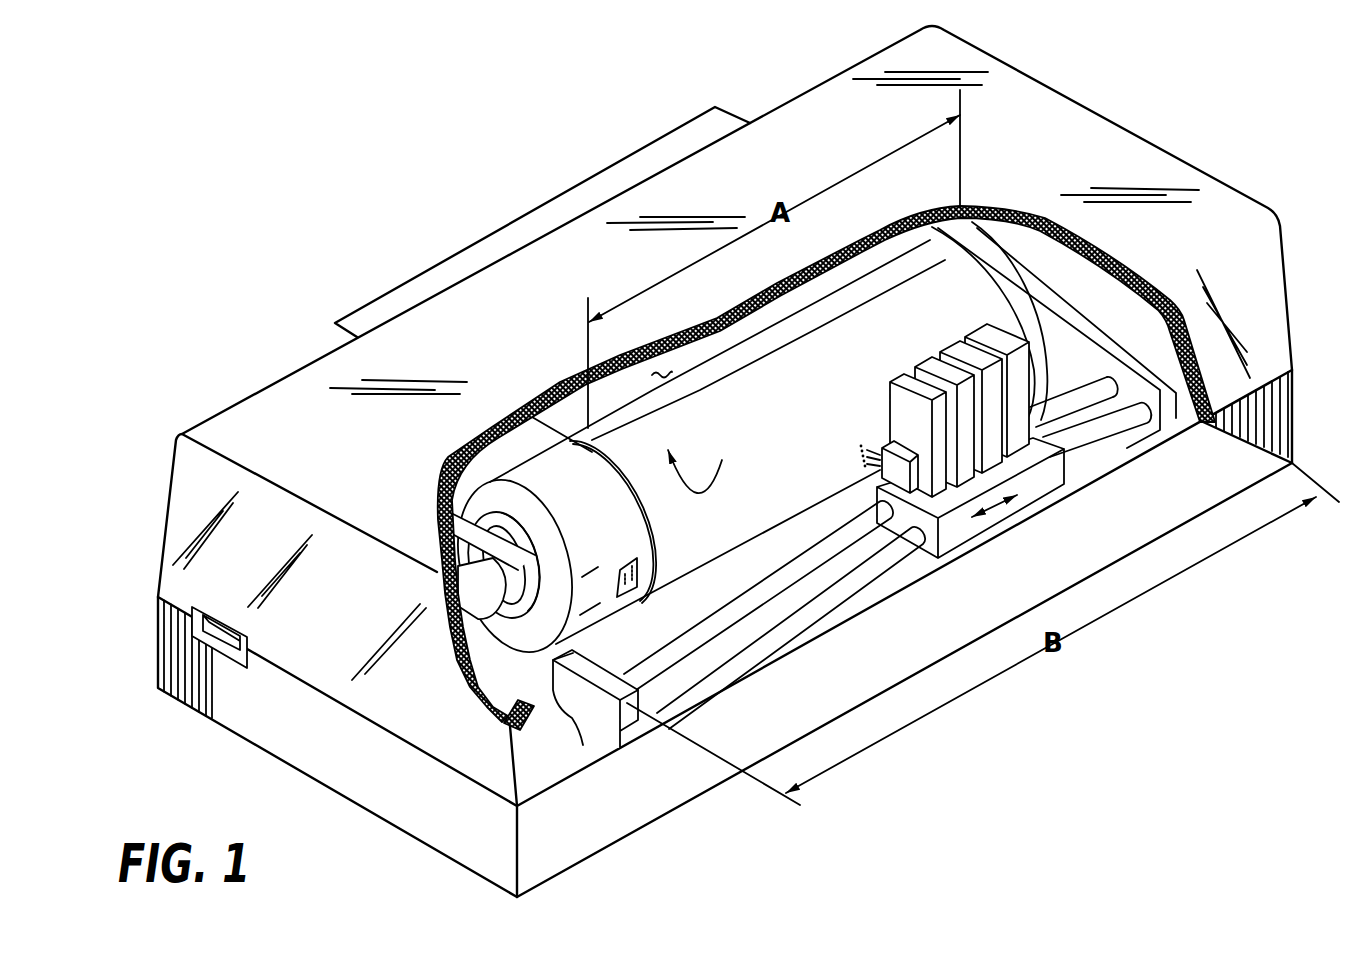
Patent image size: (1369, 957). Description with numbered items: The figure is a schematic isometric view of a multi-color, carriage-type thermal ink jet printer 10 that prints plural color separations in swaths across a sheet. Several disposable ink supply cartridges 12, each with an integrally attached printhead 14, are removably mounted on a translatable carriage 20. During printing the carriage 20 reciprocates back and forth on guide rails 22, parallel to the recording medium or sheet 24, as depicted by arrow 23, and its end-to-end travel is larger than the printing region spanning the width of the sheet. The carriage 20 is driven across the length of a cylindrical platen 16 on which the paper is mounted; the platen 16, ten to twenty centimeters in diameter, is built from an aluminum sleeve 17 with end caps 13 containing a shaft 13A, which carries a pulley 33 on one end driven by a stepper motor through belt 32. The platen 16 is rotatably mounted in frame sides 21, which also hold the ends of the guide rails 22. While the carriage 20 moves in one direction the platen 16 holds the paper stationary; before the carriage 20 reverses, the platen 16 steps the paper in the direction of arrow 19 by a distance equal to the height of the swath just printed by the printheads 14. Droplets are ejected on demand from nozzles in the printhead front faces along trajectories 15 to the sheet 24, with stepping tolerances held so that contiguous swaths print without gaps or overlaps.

The multi-color thermal ink jet printer 10 is at (424, 201).
The disposable ink supply cartridges 12 is at (985, 335).
The end caps 13 is at (554, 556).
The shaft 13A is at (467, 600).
The printhead 14 is at (897, 466).
The trajectories 15 is at (876, 480).
The cylindrical platen 16 is at (496, 448).
The aluminum sleeve 17 is at (502, 484).
The arrow 19 is at (701, 462).
The translatable carriage 20 is at (1042, 487).
The frame sides 21 is at (1103, 340).
The guide rails 22 is at (807, 553).
The arrow 23 is at (1000, 507).
The recording medium or sheet 24 is at (668, 368).
The belt 32 is at (447, 517).
The pulley 33 is at (463, 560).